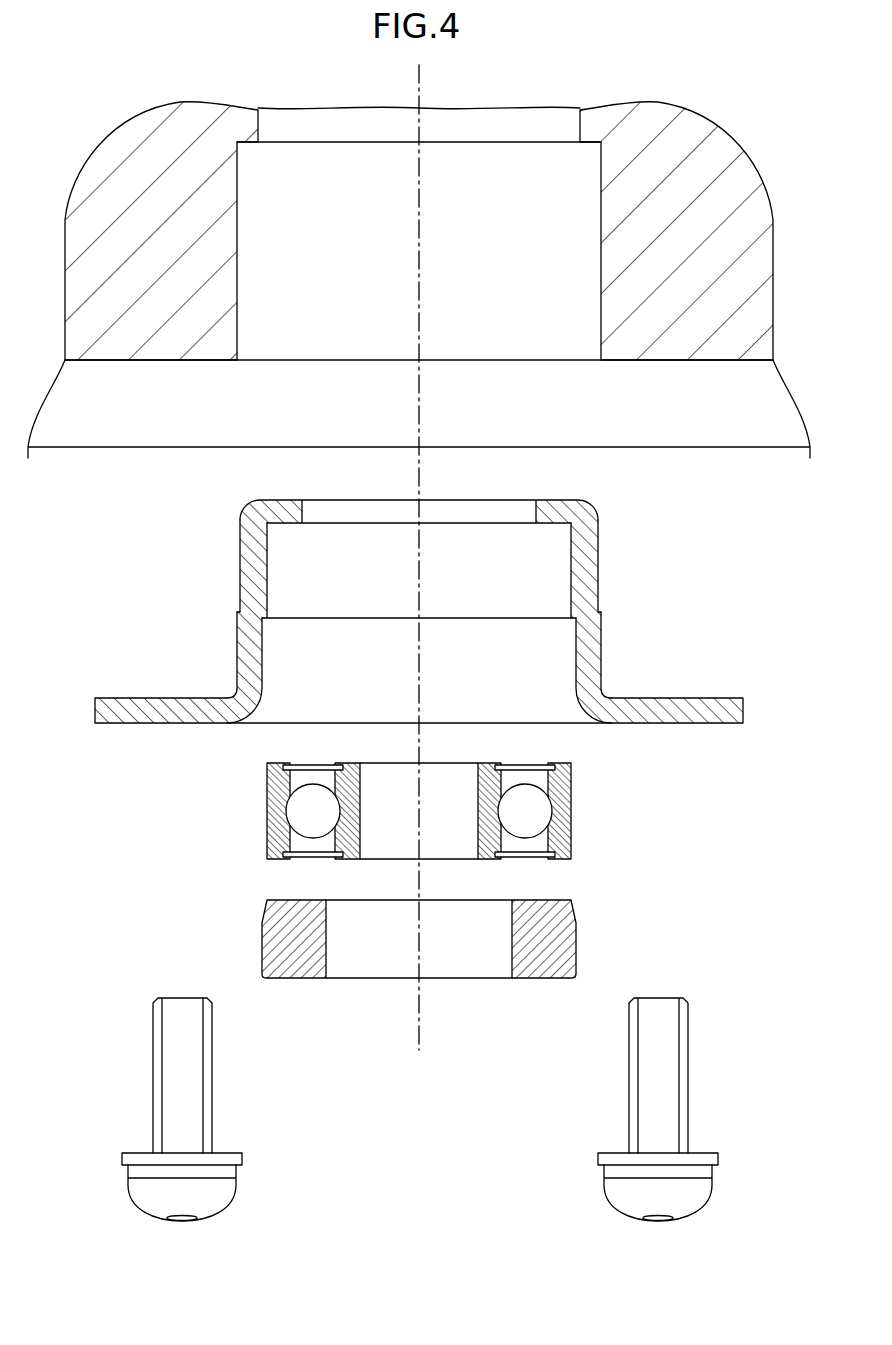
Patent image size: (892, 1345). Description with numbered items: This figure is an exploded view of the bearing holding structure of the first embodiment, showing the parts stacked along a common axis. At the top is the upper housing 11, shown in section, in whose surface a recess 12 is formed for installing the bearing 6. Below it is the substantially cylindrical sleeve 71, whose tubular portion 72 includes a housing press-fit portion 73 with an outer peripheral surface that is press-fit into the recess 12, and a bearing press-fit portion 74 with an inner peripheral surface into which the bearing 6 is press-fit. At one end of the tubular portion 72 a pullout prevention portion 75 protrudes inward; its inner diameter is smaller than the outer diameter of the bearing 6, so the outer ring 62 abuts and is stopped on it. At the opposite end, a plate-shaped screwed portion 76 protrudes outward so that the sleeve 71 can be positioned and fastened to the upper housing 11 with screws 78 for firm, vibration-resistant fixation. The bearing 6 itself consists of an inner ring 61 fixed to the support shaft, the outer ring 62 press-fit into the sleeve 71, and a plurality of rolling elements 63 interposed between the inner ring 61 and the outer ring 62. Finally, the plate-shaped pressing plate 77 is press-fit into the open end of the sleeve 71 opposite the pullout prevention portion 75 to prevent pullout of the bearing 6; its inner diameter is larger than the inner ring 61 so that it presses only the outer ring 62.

The upper housing 11 is at (657, 107).
The recess 12 is at (504, 142).
The bearing 6 is at (404, 811).
The inner ring 61 is at (293, 777).
The outer ring 62 is at (270, 800).
The rolling elements 63 is at (297, 817).
The sleeve 71 is at (598, 523).
The tubular portion 72 is at (247, 585).
The housing press-fit portion 73 is at (603, 655).
The bearing press-fit portion 74 is at (571, 575).
The pullout prevention portion 75 is at (278, 500).
The screwed portion 76 is at (118, 725).
The pressing plate 77 is at (290, 977).
The screw 78 is at (236, 1185).